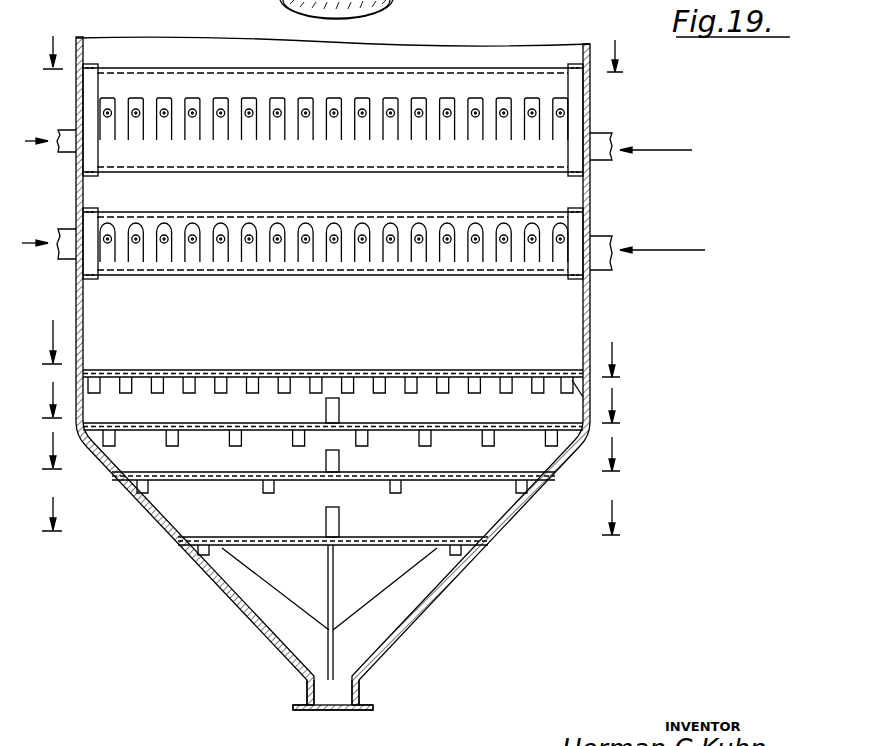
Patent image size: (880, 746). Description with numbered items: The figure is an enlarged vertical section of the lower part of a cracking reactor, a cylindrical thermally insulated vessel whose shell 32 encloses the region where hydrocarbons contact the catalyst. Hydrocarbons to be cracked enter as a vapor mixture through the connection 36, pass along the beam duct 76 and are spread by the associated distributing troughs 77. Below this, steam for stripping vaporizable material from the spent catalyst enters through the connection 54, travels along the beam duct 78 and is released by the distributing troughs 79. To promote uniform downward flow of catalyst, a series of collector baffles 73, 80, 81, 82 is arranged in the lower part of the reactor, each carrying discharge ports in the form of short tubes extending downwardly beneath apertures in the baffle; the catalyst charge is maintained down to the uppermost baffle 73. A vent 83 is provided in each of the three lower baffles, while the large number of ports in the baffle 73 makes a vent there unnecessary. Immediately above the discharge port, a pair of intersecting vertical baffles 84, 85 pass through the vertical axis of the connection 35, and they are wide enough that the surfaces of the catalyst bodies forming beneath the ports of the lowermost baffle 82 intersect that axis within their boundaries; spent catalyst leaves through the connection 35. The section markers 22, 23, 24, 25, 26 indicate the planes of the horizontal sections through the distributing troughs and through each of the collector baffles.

The vessel shell wall 32 is at (84, 50).
The beam duct 76 is at (492, 72).
The distributing troughs 77 is at (214, 97).
The beam duct 78 is at (358, 216).
The distributing troughs 79 is at (243, 223).
The connection 36 is at (597, 163).
The connection 54 is at (597, 272).
The collector baffle 73 is at (425, 372).
The collector baffle 80 is at (410, 427).
The collector baffle 81 is at (430, 475).
The collector baffle 82 is at (396, 539).
The vent 83 is at (326, 413).
The vertical baffle 84 is at (265, 605).
The vertical baffle 85 is at (334, 640).
The connection 35 is at (307, 695).
The section line 22 is at (336, 54).
The section line 23 is at (334, 348).
The section line 24 is at (334, 402).
The section line 25 is at (335, 451).
The section line 26 is at (335, 516).